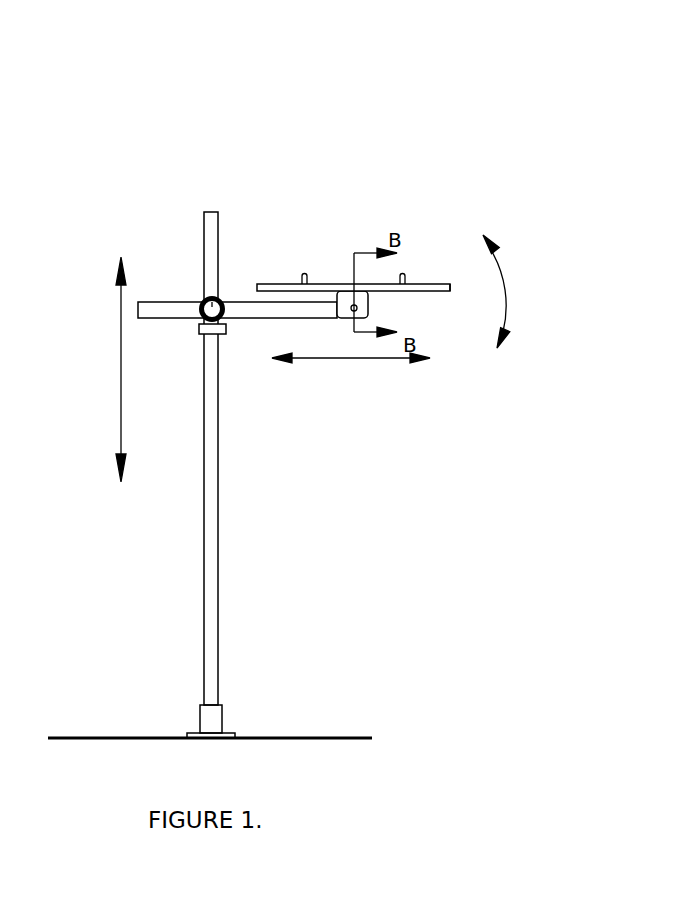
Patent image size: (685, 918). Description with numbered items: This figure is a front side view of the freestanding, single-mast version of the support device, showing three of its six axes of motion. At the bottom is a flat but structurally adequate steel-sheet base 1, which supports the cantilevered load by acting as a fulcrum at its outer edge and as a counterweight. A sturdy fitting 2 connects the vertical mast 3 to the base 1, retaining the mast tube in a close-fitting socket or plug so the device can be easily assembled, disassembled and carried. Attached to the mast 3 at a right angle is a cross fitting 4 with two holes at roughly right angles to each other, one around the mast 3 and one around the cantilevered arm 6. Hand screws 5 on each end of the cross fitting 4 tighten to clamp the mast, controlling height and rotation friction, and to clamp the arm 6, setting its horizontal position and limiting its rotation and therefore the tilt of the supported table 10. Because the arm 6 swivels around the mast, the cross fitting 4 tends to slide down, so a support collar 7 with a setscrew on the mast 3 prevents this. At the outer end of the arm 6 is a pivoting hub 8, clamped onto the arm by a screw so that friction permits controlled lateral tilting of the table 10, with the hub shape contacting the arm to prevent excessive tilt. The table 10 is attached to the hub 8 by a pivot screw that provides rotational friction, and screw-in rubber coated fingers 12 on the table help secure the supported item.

The base 1 is at (273, 675).
The base 2 is at (338, 594).
The mast 3 is at (346, 458).
The cross fitting 4 is at (392, 158).
The hand screw 5 is at (271, 205).
The cantilevered arm 6 is at (259, 169).
The support collar 7 is at (288, 372).
The pivoting hub 8 is at (509, 370).
The table 10 is at (505, 225).
The rubber coated fingers 12 is at (435, 182).